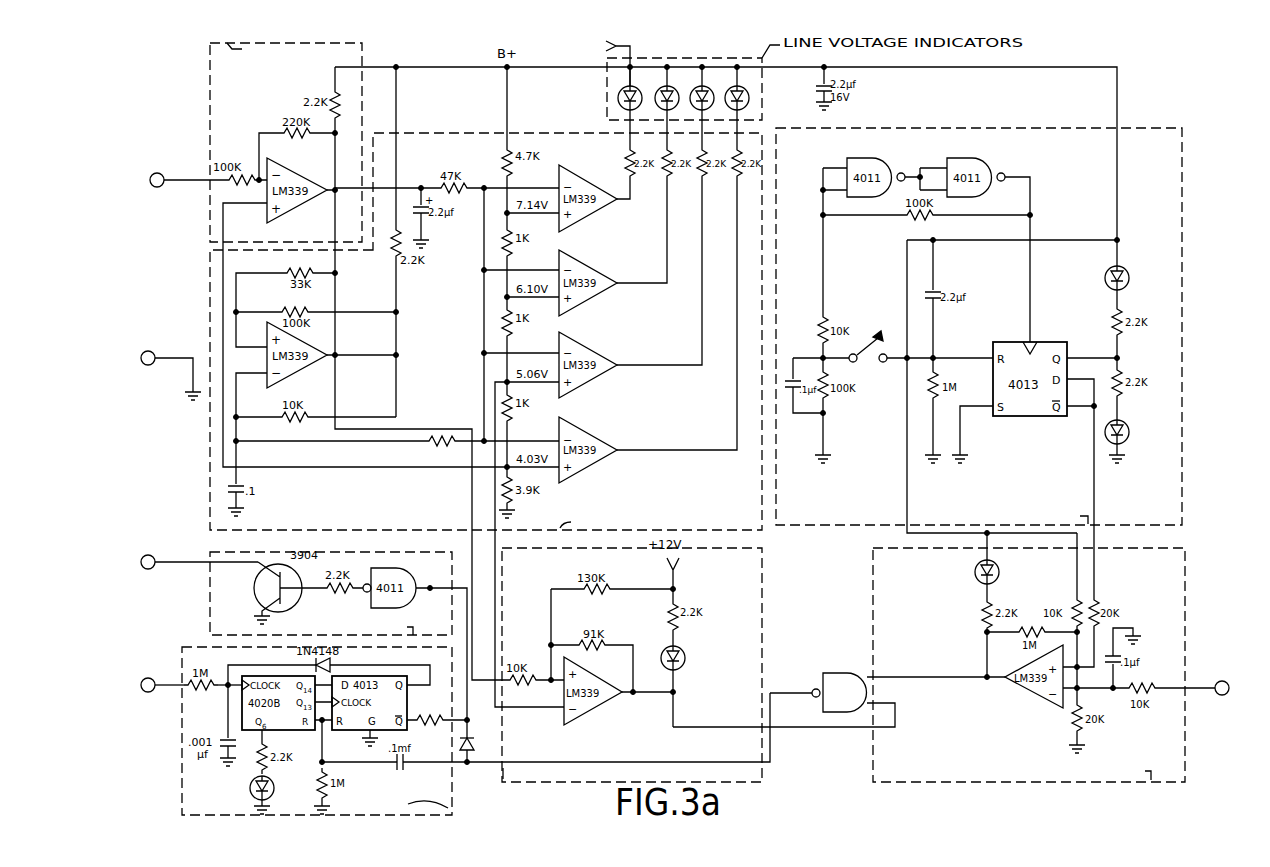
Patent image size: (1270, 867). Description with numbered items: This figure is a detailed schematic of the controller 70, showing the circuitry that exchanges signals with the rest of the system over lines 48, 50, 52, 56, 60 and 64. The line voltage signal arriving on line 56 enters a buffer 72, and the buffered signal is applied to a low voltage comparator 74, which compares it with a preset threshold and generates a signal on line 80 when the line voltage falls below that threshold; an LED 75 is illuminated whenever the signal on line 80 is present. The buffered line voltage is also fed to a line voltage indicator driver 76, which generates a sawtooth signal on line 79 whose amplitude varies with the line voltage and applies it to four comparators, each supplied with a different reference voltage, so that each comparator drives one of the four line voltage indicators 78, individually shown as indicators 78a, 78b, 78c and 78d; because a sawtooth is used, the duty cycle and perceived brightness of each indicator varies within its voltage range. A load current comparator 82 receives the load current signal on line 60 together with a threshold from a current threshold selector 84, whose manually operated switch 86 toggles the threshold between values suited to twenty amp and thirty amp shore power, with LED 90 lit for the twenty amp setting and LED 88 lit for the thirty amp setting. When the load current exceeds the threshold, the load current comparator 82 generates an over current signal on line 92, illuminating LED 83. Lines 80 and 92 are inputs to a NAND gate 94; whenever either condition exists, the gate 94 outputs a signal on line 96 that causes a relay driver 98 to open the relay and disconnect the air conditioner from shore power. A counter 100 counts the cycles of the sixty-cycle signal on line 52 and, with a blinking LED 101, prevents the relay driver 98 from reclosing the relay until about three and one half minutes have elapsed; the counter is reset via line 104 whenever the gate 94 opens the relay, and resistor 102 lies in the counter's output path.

The line 48 is at (636, 48).
The line 50 is at (152, 366).
The line 52 is at (152, 693).
The line 56 is at (160, 187).
The line 60 is at (1215, 695).
The line 64 is at (152, 570).
The controller 70 is at (800, 807).
The buffer 72 is at (210, 236).
The low voltage comparator 74 is at (762, 561).
The LED 75 is at (680, 655).
The line voltage indicator driver 76 is at (762, 471).
The line voltage indicators 78 is at (685, 58).
The indicator 78a is at (618, 98).
The indicator 78b is at (657, 88).
The indicator 78c is at (710, 88).
The indicator 78d is at (749, 98).
The line 79 is at (369, 445).
The line 80 is at (770, 743).
The load current comparator 82 is at (926, 782).
The LED 83 is at (999, 564).
The current threshold selector 84 is at (822, 527).
The switch 86 is at (866, 335).
The LED 88 is at (1104, 279).
The LED 90 is at (1130, 428).
The line 92 is at (875, 677).
The NAND gate 94 is at (845, 673).
The line 96 is at (770, 689).
The relay driver 98 is at (210, 615).
The counter 100 is at (182, 646).
The LED 101 is at (250, 788).
The resistor 102 is at (463, 714).
The line 104 is at (468, 765).